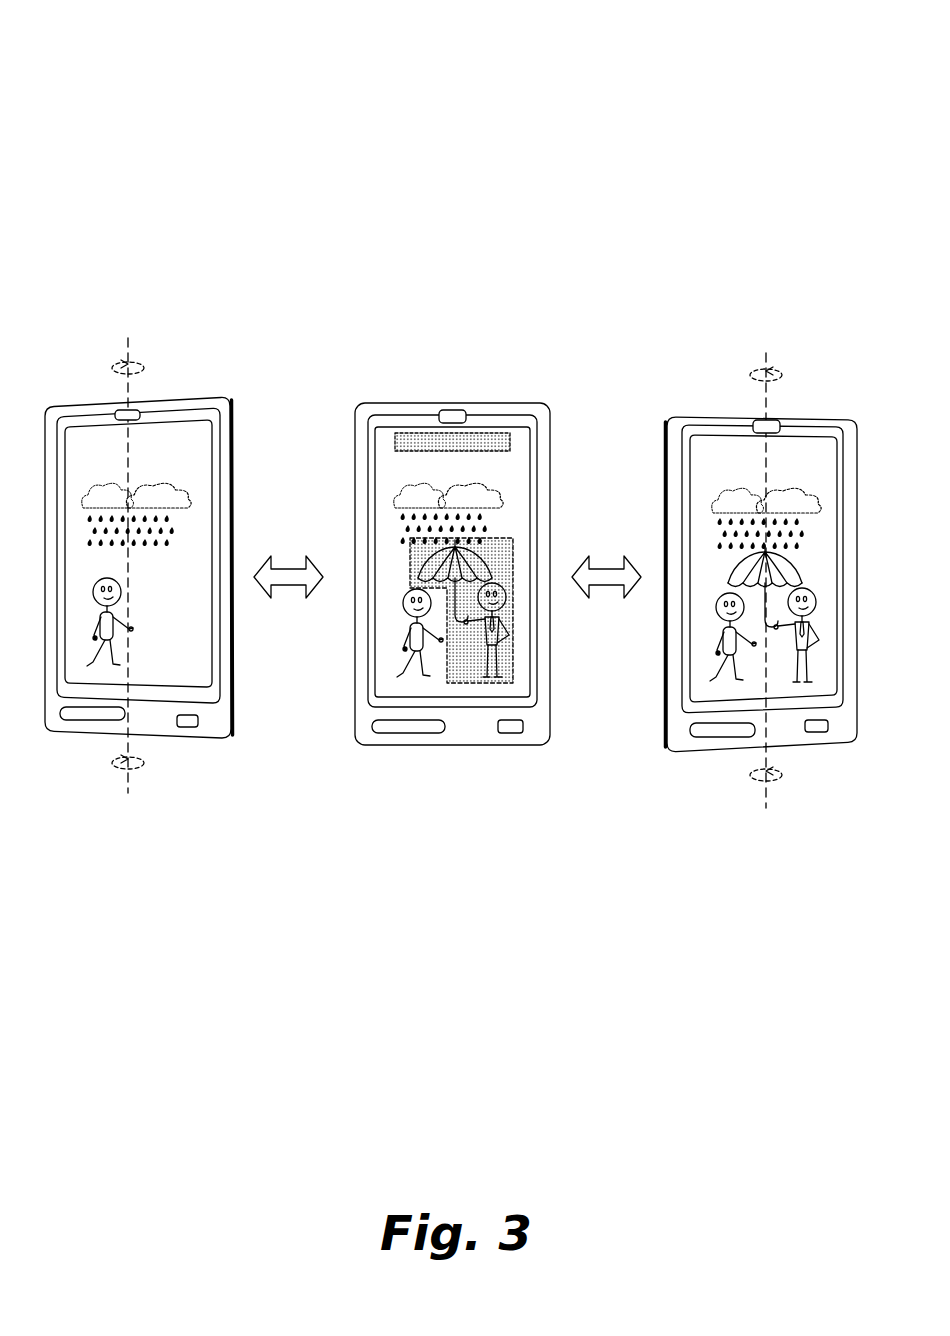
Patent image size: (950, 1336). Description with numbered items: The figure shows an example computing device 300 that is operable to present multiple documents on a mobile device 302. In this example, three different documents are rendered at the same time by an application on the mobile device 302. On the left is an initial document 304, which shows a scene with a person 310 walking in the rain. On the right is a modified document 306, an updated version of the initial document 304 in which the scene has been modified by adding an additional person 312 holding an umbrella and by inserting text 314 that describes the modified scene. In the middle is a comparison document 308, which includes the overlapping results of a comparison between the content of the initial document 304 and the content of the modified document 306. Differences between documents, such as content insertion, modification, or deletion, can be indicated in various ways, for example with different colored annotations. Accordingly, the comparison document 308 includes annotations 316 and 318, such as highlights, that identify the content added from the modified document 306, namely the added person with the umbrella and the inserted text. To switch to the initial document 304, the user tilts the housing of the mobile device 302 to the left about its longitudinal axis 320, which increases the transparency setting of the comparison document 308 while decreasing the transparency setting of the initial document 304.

The computing device 300 is at (133, 55).
The mobile device 302 is at (500, 403).
The initial document 304 is at (173, 445).
The modified document 306 is at (705, 467).
The comparison document 308 is at (388, 462).
The person 310 is at (110, 667).
The additional person 312 is at (793, 683).
The text 314 is at (747, 452).
The annotation 316 is at (513, 610).
The annotation 318 is at (511, 443).
The longitudinal axis 320 is at (127, 340).